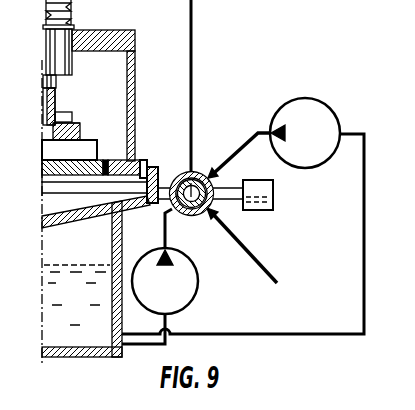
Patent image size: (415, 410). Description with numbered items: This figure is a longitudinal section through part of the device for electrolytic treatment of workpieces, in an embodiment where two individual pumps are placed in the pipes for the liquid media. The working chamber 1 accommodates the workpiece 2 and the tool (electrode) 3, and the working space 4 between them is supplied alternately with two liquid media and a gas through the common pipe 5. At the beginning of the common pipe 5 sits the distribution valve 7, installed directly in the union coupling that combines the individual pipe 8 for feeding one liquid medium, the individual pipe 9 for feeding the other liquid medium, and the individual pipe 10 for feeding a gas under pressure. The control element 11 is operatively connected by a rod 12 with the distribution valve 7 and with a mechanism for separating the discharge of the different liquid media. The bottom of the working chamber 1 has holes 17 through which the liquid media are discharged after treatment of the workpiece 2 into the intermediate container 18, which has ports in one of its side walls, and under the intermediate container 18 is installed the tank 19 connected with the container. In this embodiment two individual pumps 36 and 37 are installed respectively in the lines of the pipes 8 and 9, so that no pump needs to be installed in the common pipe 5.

The working chamber 1 is at (123, 58).
The workpiece 2 is at (80, 130).
The tool (electrode) 3 is at (65, 112).
The working space 4 is at (68, 128).
The common pipe 5 is at (192, 87).
The distribution valve 7 is at (194, 216).
The individual pipe 8 is at (163, 232).
The individual pipe 9 is at (236, 148).
The individual pipe 10 is at (262, 254).
The control element 11 is at (270, 190).
The rod 12 is at (45, 190).
The holes 17 is at (131, 162).
The intermediate container 18 is at (53, 208).
The tank 19 is at (88, 357).
The individual pump 36 is at (196, 300).
The individual pump 37 is at (293, 97).